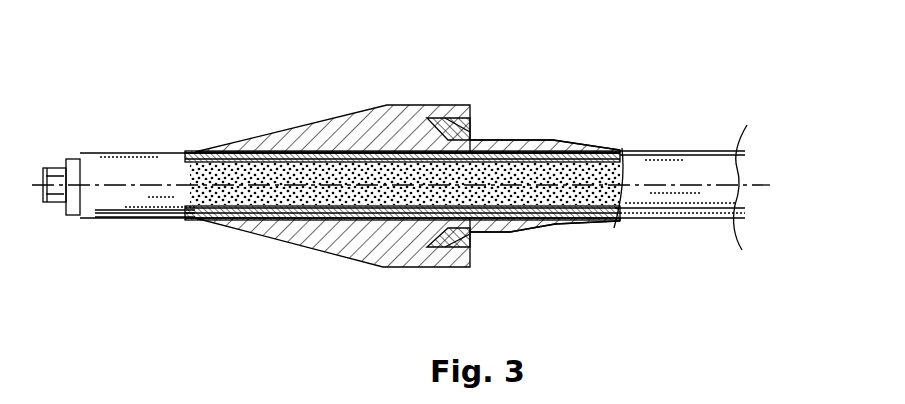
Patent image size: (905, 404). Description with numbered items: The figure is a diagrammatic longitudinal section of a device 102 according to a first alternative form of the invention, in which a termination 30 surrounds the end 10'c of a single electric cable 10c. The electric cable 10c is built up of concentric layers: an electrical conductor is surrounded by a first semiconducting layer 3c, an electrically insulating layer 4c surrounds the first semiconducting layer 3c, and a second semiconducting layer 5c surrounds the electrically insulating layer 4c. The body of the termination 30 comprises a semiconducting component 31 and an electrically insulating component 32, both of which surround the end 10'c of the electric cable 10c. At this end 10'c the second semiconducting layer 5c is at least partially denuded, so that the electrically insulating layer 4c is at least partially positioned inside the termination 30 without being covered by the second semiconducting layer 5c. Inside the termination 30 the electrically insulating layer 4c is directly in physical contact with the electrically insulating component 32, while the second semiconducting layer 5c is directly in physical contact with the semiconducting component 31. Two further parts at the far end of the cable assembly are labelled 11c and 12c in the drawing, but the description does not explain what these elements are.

The device 102 is at (157, 302).
The end nut 11c is at (50, 205).
The end fitting 12c is at (80, 198).
The electrically insulating layer 4c is at (130, 172).
The first semiconducting layer 3c is at (200, 152).
The end of the electric cable 10'c is at (405, 140).
The termination 30 is at (352, 265).
The electrically insulating component 32 is at (380, 128).
The semiconducting component 31 is at (448, 118).
The second semiconducting layer 5c is at (603, 147).
The electric cable 10c is at (666, 130).